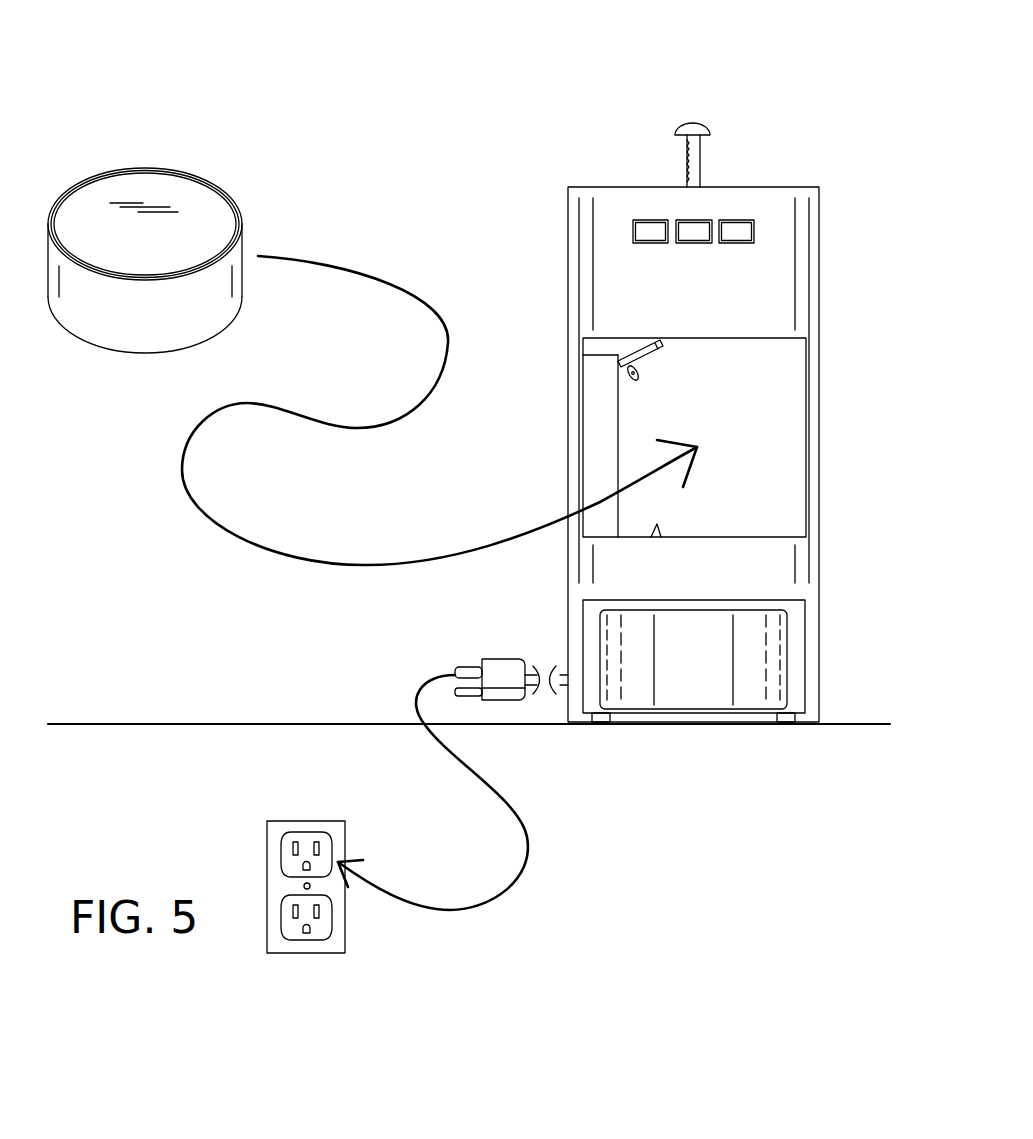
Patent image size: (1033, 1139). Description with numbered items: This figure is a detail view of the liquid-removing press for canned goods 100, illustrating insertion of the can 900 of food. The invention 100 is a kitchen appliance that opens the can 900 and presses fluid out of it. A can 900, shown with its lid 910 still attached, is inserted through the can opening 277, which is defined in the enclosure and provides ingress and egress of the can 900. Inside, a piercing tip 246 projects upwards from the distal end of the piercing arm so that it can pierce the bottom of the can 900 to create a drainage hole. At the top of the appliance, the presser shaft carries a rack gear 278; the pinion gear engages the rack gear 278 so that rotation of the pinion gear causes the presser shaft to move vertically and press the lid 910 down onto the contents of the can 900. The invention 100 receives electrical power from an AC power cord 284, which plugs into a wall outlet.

The liquid-removing press for canned goods 100 is at (870, 124).
The rack gear 278 is at (703, 148).
The can opening 277 is at (805, 400).
The piercing tip 246 is at (657, 524).
The AC power cord 284 is at (507, 665).
The can 900 is at (47, 265).
The lid 910 is at (202, 212).